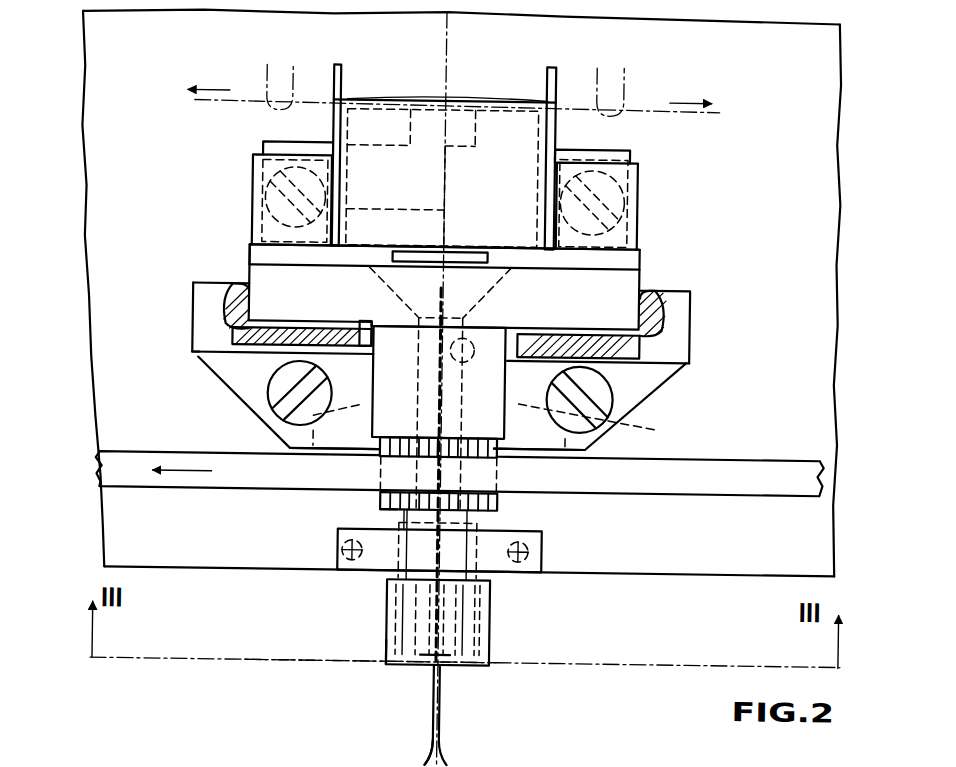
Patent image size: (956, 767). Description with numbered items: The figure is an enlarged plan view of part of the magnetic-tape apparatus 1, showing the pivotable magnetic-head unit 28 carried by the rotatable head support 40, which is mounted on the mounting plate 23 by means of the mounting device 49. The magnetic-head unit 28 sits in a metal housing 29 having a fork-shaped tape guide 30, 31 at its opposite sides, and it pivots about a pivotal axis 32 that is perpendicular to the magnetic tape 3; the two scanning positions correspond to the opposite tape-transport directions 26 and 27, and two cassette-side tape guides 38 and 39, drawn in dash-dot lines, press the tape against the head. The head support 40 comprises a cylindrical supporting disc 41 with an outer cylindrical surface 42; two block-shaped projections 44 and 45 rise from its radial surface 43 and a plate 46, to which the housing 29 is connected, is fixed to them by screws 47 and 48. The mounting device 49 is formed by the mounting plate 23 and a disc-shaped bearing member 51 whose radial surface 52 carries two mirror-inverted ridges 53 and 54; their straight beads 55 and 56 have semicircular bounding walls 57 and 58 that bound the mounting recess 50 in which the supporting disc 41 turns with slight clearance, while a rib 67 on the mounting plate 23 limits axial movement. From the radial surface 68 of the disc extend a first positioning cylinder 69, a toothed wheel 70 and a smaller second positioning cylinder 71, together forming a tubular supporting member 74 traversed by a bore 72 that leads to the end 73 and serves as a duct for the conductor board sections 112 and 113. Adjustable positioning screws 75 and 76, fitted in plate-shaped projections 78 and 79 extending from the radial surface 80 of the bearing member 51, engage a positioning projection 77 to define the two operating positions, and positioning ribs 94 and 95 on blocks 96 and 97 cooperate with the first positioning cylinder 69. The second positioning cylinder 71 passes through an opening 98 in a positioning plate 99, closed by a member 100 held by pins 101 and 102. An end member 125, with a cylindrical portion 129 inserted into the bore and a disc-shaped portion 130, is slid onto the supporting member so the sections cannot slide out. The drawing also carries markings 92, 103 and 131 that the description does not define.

The magnetic-tape apparatus 1 is at (250, 664).
The magnetic tape 3 is at (677, 113).
The mounting plate 23 is at (150, 572).
The tape-transport direction 26 is at (670, 100).
The tape-transport direction 27 is at (217, 92).
The magnetic-head unit 28 is at (481, 79).
The metal housing 29 is at (347, 99).
The fork-shaped tape guide 30 is at (550, 77).
The fork-shaped tape guide 31 is at (329, 75).
The pivotal axis 32 is at (443, 37).
The tape guide 38 is at (260, 80).
The tape guide 39 is at (622, 86).
The head support 40 is at (641, 263).
The supporting disc 41 is at (632, 279).
The outer cylindrical surface 42 is at (249, 258).
The radial surface 43 is at (524, 262).
The block-shaped projection 44 is at (249, 213).
The block-shaped projection 45 is at (632, 212).
The plate 46 is at (286, 152).
The screw 47 is at (262, 165).
The screw 48 is at (625, 170).
The mounting device 49 is at (698, 362).
The mounting recess 50 is at (247, 278).
The bearing member 51 is at (642, 388).
The radial surface 52 is at (560, 325).
The ridge 53 is at (222, 306).
The ridge 54 is at (675, 301).
The straight bead 55 is at (250, 309).
The straight bead 56 is at (640, 297).
The semicircular bounding wall 57 is at (250, 317).
The semicircular bounding wall 58 is at (640, 327).
The rib 67 is at (476, 256).
The radial surface 68 is at (334, 333).
The first positioning cylinder 69 is at (353, 334).
The toothed wheel 70 is at (383, 498).
The second positioning cylinder 71 is at (470, 523).
The bore 72 is at (475, 348).
The end 73 is at (472, 662).
The tubular supporting member 74 is at (393, 513).
The positioning screw 75 is at (274, 416).
The positioning screw 76 is at (603, 436).
The positioning projection 77 is at (650, 425).
The plate-shaped projection 78 is at (241, 377).
The plate-shaped projection 79 is at (654, 400).
The radial surface 80 is at (197, 363).
The rail 92 is at (786, 491).
The positioning rib 94 is at (408, 418).
The positioning rib 95 is at (493, 428).
The block 96 is at (300, 450).
The block 97 is at (585, 448).
The opening 98 is at (481, 577).
The positioning plate 99 is at (388, 548).
The member 100 is at (545, 548).
The pin 101 is at (356, 564).
The pin 102 is at (541, 561).
The direction arrow 103 is at (212, 479).
The conductor board section 112 is at (456, 753).
The conductor board section 113 is at (438, 748).
The end member 125 is at (390, 645).
The cylindrical portion 129 is at (452, 662).
The disc-shaped portion 130 is at (436, 665).
The holder block 131 is at (493, 621).